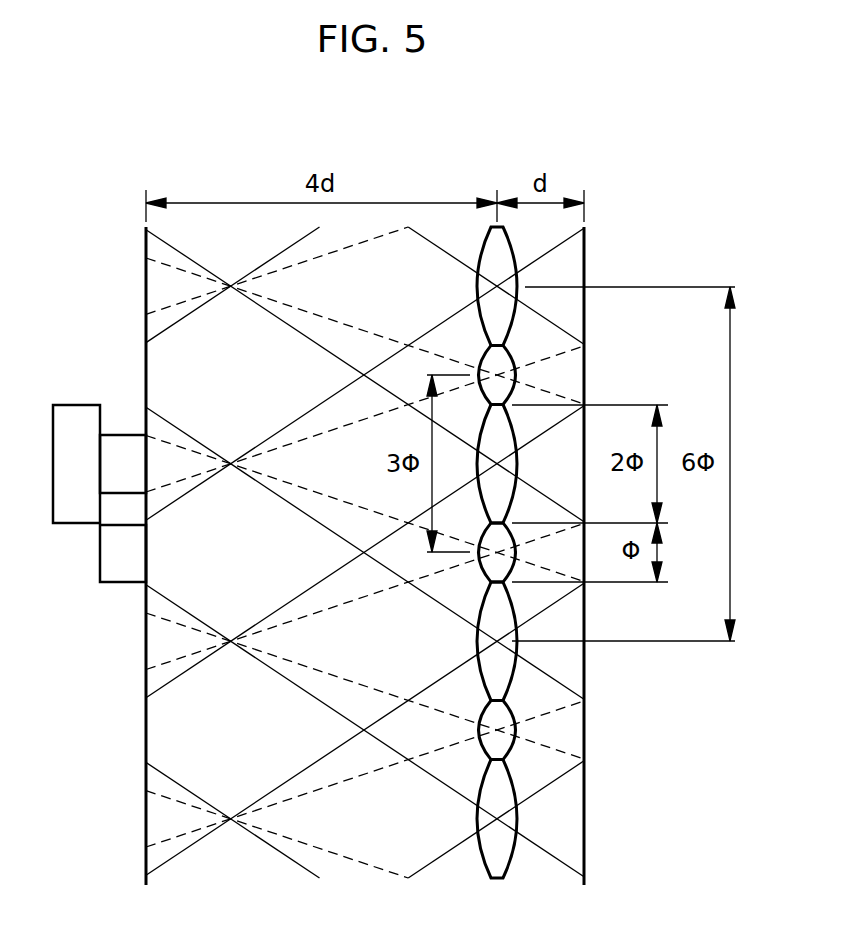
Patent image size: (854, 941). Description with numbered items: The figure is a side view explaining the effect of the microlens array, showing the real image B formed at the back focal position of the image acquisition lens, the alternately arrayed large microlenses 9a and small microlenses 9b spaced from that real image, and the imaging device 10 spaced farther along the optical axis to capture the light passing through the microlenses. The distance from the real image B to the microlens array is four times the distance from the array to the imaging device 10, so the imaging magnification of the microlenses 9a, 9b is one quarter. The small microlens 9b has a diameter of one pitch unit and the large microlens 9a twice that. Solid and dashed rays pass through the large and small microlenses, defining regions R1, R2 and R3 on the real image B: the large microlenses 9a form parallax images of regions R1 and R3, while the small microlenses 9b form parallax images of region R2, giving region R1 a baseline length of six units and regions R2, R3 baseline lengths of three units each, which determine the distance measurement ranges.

The large microlens 9a is at (478, 286).
The small microlens 9b is at (478, 372).
The imaging device 10 is at (584, 275).
The real image B is at (146, 284).
The region R1 is at (76, 464).
The region R2 is at (123, 464).
The region R3 is at (123, 553).